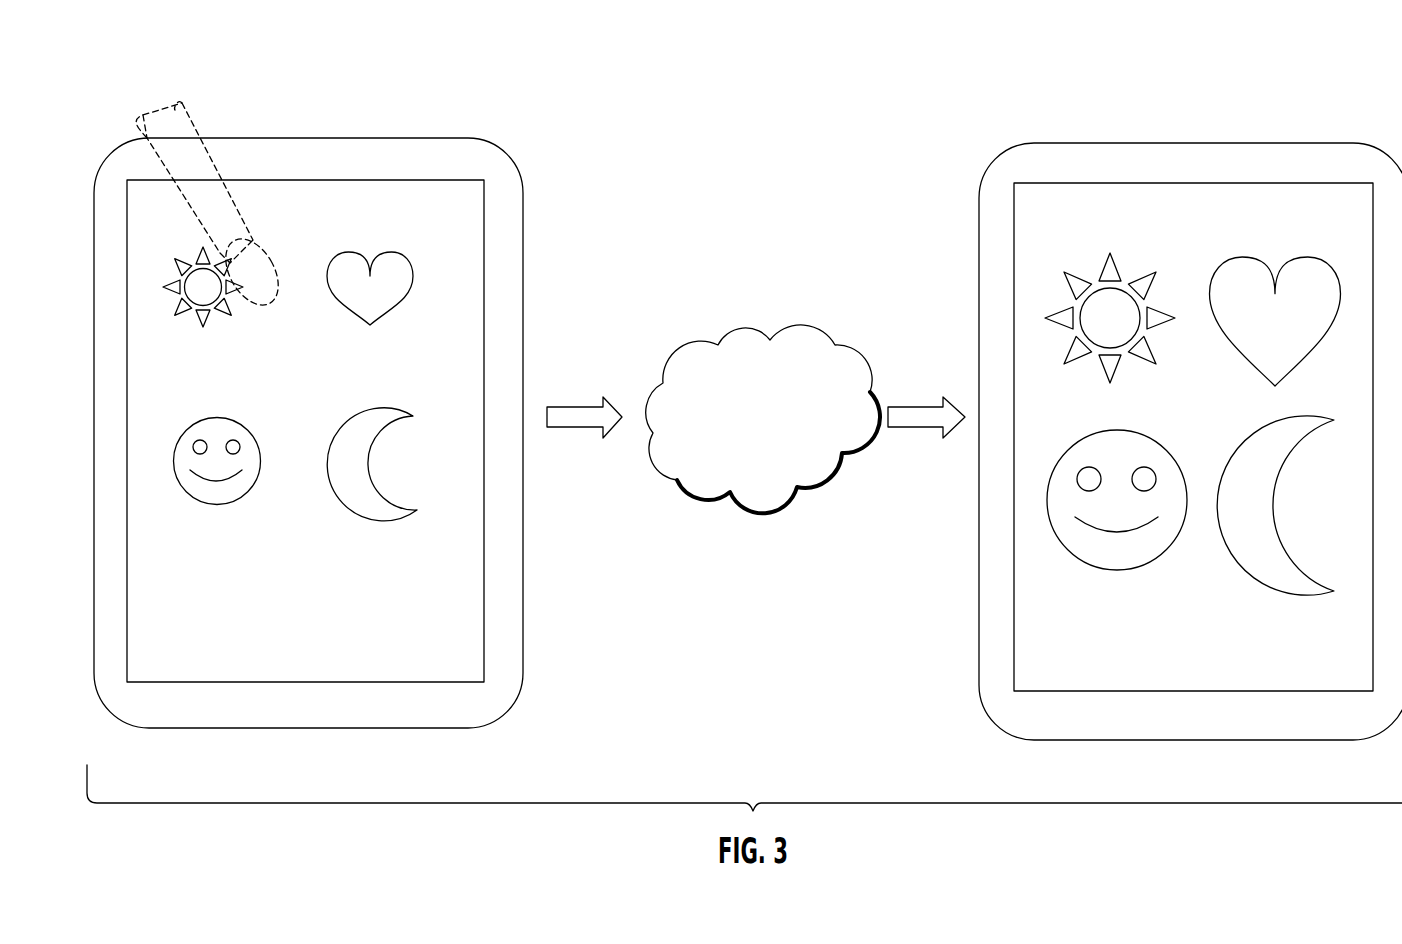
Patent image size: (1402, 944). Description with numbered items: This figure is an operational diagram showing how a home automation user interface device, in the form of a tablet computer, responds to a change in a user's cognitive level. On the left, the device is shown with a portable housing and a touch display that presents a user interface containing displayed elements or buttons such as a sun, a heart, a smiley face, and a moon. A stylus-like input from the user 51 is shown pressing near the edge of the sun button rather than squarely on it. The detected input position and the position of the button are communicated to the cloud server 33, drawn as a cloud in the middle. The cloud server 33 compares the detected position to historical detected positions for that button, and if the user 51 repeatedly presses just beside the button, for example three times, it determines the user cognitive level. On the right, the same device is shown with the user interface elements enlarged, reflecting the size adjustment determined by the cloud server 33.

The cloud server 33 is at (707, 499).
The user 51 is at (165, 112).